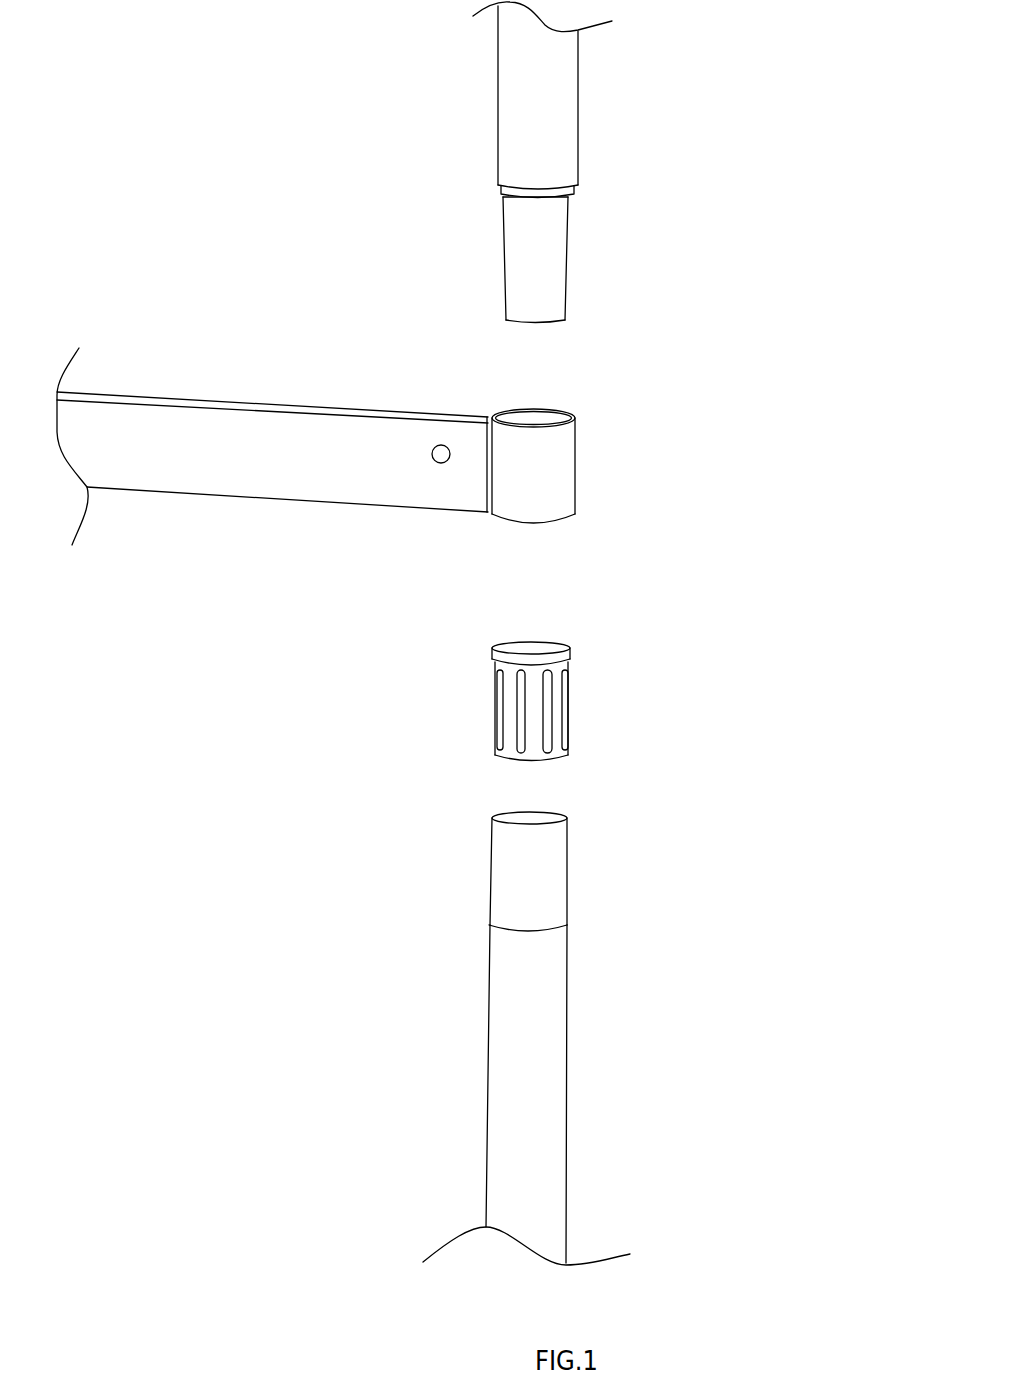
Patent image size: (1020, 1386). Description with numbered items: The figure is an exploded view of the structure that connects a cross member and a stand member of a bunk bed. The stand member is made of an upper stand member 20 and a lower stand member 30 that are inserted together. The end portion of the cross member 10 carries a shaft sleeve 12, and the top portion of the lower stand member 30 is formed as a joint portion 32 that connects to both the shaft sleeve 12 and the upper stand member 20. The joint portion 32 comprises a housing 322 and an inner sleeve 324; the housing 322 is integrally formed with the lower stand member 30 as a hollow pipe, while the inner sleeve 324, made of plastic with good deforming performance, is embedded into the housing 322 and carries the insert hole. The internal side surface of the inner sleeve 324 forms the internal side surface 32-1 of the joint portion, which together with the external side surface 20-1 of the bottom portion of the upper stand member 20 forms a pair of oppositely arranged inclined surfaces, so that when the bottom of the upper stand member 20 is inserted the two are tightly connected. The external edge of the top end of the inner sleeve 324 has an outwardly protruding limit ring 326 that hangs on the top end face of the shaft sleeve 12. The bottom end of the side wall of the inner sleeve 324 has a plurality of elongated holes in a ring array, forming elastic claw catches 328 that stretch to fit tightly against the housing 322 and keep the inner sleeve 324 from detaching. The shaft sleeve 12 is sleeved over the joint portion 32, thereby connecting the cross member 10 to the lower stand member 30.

The cross member 10 is at (215, 465).
The shaft sleeve 12 is at (565, 482).
The upper stand member 20 is at (567, 107).
The external side surface of the bottom portion of the upper stand member 20-1 is at (520, 253).
The lower stand member 30 is at (547, 1089).
The joint portion 32 is at (753, 708).
The internal side surface of the joint portion 32-1 is at (510, 898).
The housing 322 is at (552, 860).
The inner sleeve 324 is at (557, 702).
The limit ring 326 is at (492, 650).
The elastic claw catches 328 is at (503, 740).